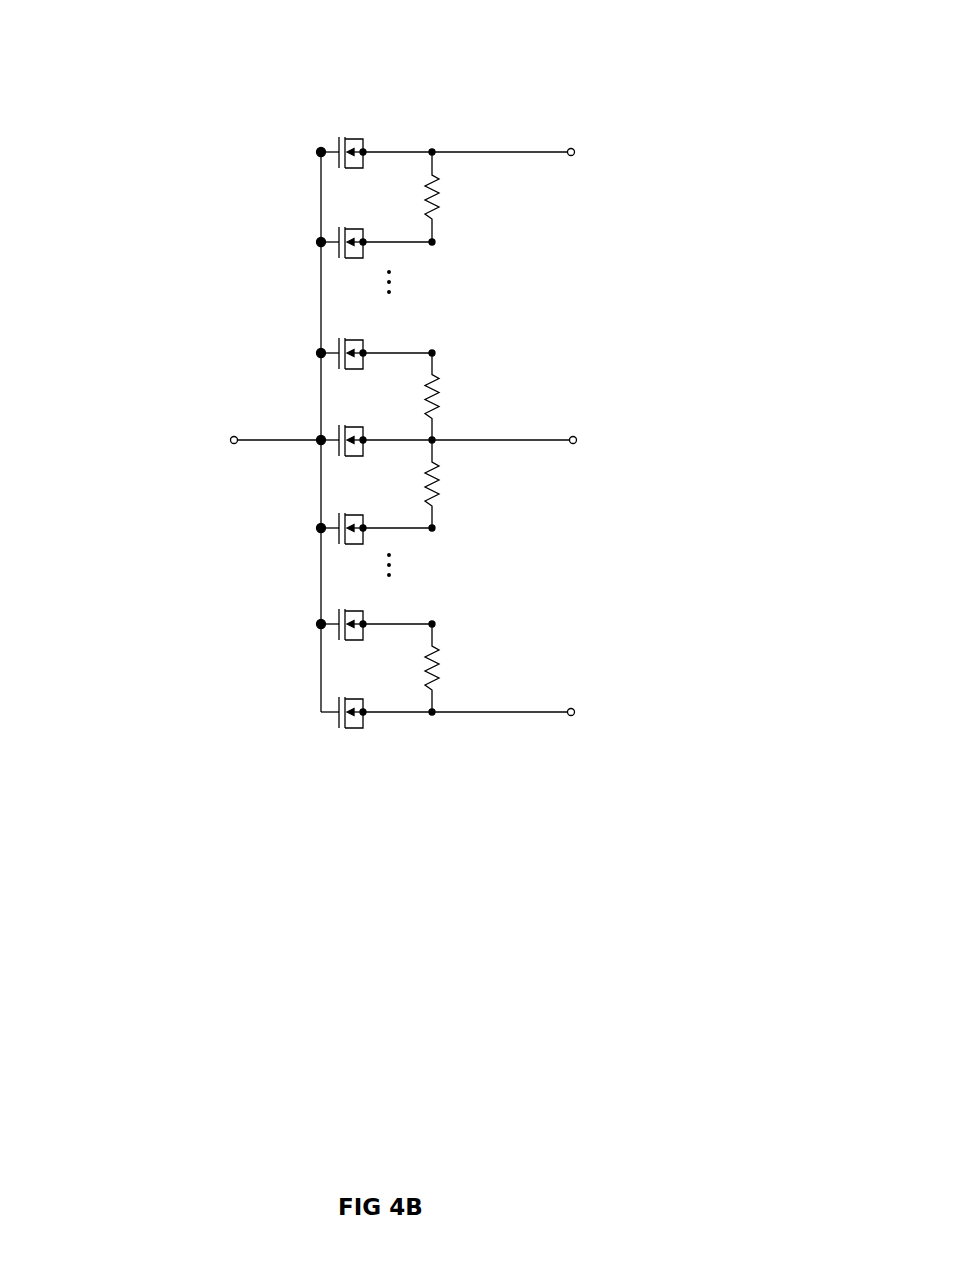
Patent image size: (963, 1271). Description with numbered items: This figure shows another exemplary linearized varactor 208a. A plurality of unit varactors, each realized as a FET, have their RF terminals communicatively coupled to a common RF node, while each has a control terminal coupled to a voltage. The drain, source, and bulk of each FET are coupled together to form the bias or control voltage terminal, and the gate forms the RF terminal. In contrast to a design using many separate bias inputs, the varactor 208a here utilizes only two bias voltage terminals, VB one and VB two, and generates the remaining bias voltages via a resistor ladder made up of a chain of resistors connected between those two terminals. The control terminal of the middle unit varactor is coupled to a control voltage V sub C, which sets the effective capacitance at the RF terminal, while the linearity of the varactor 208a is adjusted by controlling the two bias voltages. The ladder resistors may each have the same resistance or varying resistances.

The varactor 208a is at (107, 83).